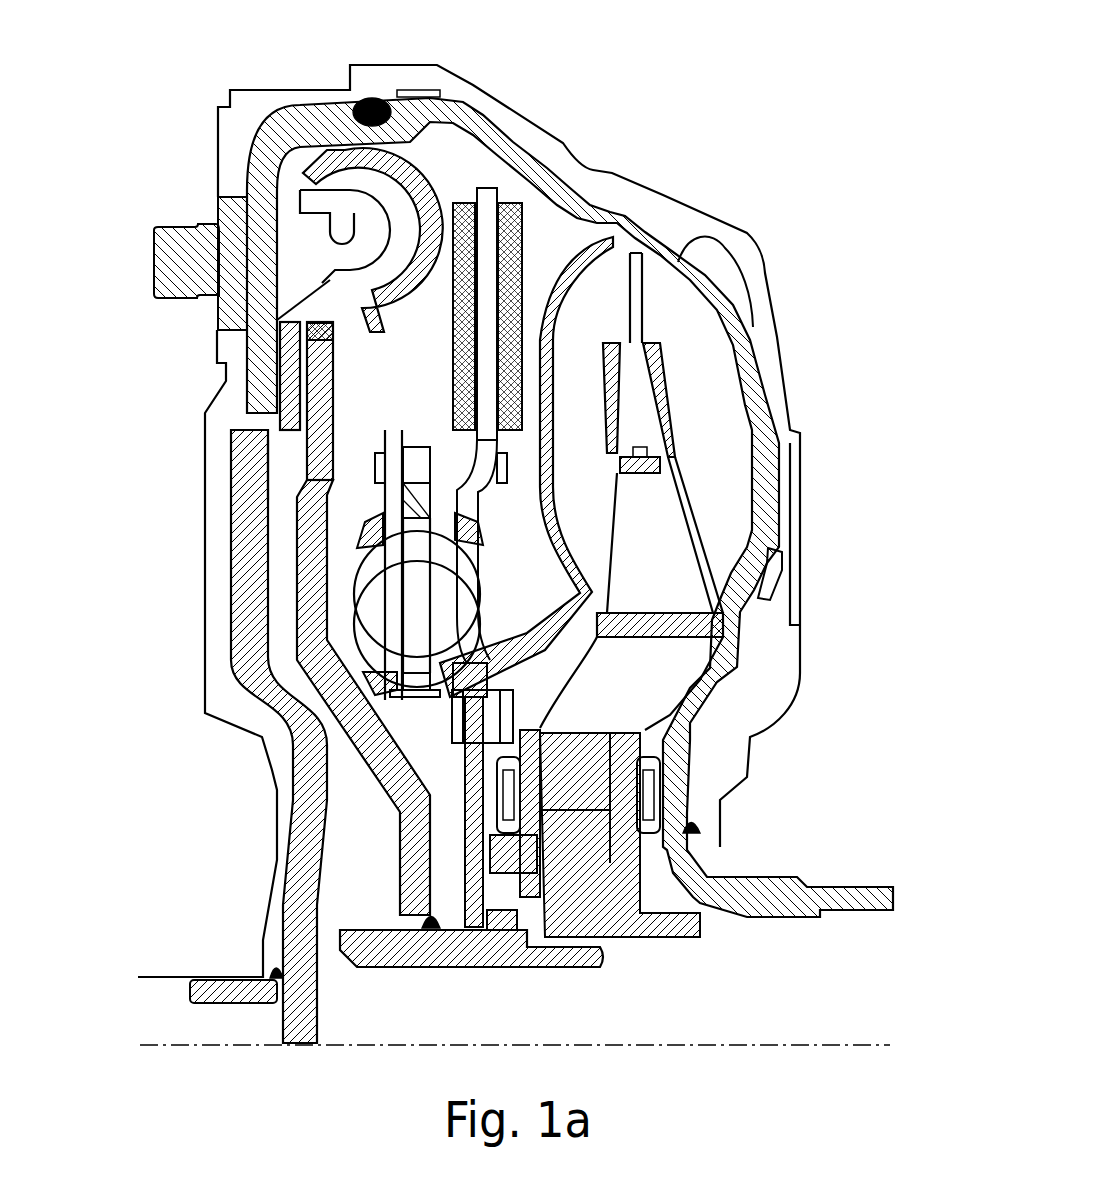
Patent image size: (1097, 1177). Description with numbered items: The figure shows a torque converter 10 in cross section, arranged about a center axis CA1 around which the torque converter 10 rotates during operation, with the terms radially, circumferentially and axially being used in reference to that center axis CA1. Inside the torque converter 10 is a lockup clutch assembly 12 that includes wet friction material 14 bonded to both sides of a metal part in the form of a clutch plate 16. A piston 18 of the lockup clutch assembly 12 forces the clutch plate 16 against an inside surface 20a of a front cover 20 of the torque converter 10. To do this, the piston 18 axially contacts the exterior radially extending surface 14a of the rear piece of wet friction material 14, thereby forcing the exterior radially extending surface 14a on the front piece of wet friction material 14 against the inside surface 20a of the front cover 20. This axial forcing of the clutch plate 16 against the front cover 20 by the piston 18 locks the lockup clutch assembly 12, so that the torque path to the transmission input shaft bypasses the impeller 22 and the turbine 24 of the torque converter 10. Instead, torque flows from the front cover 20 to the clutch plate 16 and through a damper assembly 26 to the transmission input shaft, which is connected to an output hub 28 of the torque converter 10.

The torque converter 10 is at (730, 145).
The lockup clutch assembly 12 is at (341, 294).
The wet friction material 14 is at (273, 365).
The exterior radially extending surface 14a is at (267, 388).
The clutch plate 16 is at (277, 360).
The piston 18 is at (313, 513).
The front cover 20 is at (267, 433).
The inside surface 20a is at (267, 473).
The impeller 22 is at (815, 447).
The turbine 24 is at (557, 260).
The damper assembly 26 is at (463, 180).
The output hub 28 is at (430, 957).
The center axis CA1 is at (763, 1040).